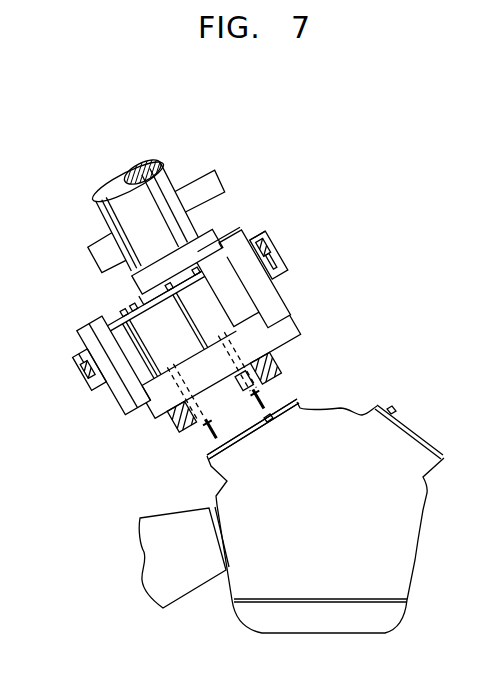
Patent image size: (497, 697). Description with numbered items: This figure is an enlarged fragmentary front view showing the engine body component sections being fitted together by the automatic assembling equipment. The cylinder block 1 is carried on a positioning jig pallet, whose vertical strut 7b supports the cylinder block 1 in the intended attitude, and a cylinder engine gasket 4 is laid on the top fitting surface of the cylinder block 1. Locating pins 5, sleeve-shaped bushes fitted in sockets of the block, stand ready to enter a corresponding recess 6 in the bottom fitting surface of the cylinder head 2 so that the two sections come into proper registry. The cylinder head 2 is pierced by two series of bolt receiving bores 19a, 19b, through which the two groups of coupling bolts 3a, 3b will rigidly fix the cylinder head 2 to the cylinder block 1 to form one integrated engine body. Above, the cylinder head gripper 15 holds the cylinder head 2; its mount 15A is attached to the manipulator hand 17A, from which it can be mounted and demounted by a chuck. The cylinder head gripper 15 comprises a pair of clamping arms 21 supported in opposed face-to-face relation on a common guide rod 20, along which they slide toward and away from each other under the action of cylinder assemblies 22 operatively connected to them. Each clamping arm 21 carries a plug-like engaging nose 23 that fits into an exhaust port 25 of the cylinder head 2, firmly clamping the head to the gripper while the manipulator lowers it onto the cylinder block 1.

The cylinder block 1 is at (437, 530).
The cylinder head 2 is at (272, 341).
The coupling bolts 3a is at (276, 390).
The coupling bolts 3b is at (208, 437).
The cylinder engine gasket 4 is at (428, 442).
The locating pin 5 is at (285, 410).
The recess 6 is at (252, 410).
The vertical strut 7b is at (154, 516).
The cylinder head gripper 15 is at (268, 233).
The mount 15A is at (132, 280).
The manipulator hand 17A is at (160, 176).
The bolt receiving bores 19a is at (240, 340).
The bolt receiving bores 19b is at (167, 412).
The guide rod 20 is at (276, 251).
The clamping arms 21 is at (273, 297).
The cylinder assemblies 22 is at (273, 237).
The engaging nose 23 is at (283, 370).
The exhaust port 25 is at (243, 385).